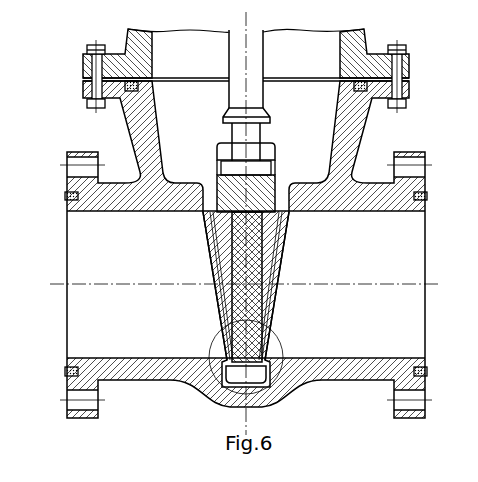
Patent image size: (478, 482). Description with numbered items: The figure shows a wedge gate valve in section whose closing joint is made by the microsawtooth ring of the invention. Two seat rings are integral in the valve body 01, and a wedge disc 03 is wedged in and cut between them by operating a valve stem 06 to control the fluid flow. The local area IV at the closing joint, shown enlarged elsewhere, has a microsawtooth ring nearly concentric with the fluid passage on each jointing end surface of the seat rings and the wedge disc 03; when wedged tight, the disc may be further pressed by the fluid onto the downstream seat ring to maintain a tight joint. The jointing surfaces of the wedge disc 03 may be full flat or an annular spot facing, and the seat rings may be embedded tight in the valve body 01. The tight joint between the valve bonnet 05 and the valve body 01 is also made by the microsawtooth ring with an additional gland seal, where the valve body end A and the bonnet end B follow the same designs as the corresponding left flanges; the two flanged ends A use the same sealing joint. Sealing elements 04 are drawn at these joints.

The valve body 01 is at (225, 395).
The wedge disc 03 is at (263, 368).
The sealing ring 04 is at (362, 90).
The valve bonnet 05 is at (357, 37).
The valve stem 06 is at (233, 60).
The valve body end A is at (406, 90).
The bonnet end B is at (406, 63).
The local area IV is at (282, 379).